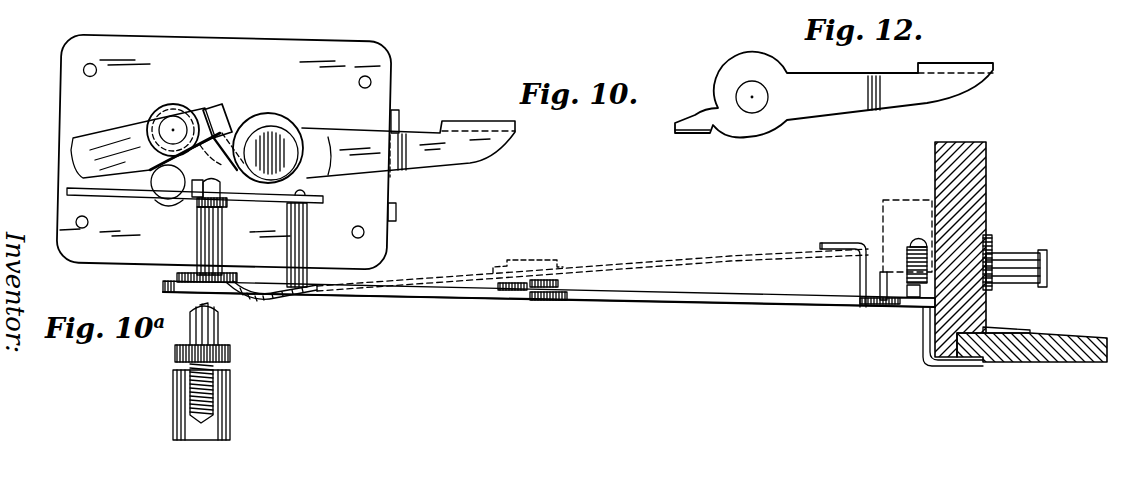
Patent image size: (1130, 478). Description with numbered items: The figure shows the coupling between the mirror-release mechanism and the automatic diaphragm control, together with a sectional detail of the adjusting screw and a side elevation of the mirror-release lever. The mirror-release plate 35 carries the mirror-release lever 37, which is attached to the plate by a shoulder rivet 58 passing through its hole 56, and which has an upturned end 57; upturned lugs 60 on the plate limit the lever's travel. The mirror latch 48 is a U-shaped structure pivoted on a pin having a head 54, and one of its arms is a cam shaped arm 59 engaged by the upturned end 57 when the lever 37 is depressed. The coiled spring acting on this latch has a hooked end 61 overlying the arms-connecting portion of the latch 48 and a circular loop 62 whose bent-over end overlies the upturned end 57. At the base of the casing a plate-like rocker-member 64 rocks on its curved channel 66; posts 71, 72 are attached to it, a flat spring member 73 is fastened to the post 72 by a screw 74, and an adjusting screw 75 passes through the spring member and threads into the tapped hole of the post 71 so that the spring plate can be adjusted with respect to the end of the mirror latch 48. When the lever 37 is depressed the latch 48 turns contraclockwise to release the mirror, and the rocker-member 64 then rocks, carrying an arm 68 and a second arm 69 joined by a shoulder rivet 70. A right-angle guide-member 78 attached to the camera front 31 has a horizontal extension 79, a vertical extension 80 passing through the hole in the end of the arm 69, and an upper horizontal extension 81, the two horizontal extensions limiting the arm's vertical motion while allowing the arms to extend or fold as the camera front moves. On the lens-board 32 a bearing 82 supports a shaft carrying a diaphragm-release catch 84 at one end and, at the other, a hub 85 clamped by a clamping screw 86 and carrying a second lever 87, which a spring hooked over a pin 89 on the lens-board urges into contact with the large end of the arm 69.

In FIG. 10, the camera front 31 is at (1063, 358).
In FIG. 10, the lens-board 32 is at (984, 181).
In FIG. 10, the mirror-release plate 35 is at (393, 63).
In FIG. 10, the mirror-release lever 37 is at (481, 148).
In FIG. 12, the mirror-release lever 37 is at (958, 88).
In FIG. 10, the mirror latch 48 is at (112, 135).
In FIG. 10, the head 54 is at (175, 127).
In FIG. 12, the hole 56 is at (753, 108).
In FIG. 10, the upturned end 57 is at (192, 197).
In FIG. 12, the upturned end 57 is at (693, 133).
In FIG. 10, the shoulder rivet 58 is at (292, 135).
In FIG. 10, the cam shaped arm 59 is at (158, 193).
In FIG. 10, the upturned lugs 60 is at (399, 115).
In FIG. 10, the hooked end 61 is at (229, 110).
In FIG. 10, the circular loop 62 is at (172, 207).
In FIG. 10, the rocker-member 64 is at (320, 296).
In FIG. 10, the curved channel 66 is at (283, 296).
In FIG. 10, the arm 68 is at (472, 299).
In FIG. 10, the second arm 69 is at (665, 258).
In FIG. 10, the shoulder rivet 70 is at (563, 282).
In FIG. 10, the post 71 is at (222, 250).
In FIG. 10A, the post 71 is at (230, 402).
In FIG. 10, the post 72 is at (307, 232).
In FIG. 10, the flat spring member 73 is at (80, 193).
In FIG. 10, the screw 74 is at (308, 189).
In FIG. 10, the adjusting screw 75 is at (216, 190).
In FIG. 10A, the adjusting screw 75 is at (219, 330).
In FIG. 10, the guide-member 78 is at (923, 356).
In FIG. 10, the horizontal extension 79 is at (908, 306).
In FIG. 10, the vertical extension 80 is at (858, 279).
In FIG. 10, the upper horizontal extension 81 is at (832, 243).
In FIG. 10, the bearing 82 is at (1020, 257).
In FIG. 10, the diaphragm-release catch 84 is at (1048, 282).
In FIG. 10, the hub 85 is at (907, 265).
In FIG. 10, the clamping screw 86 is at (916, 237).
In FIG. 10, the second lever 87 is at (858, 305).
In FIG. 10, the pin 89 is at (907, 292).